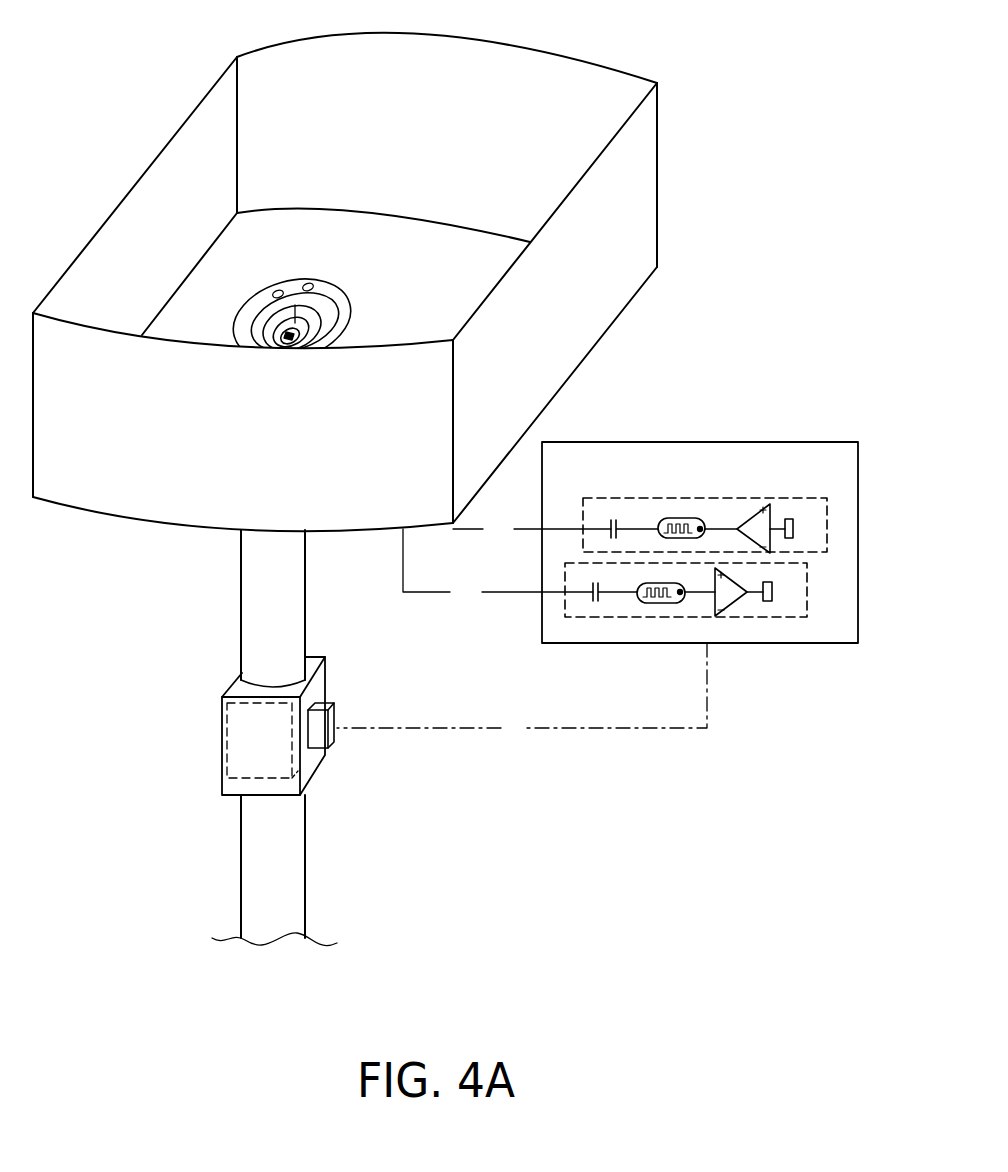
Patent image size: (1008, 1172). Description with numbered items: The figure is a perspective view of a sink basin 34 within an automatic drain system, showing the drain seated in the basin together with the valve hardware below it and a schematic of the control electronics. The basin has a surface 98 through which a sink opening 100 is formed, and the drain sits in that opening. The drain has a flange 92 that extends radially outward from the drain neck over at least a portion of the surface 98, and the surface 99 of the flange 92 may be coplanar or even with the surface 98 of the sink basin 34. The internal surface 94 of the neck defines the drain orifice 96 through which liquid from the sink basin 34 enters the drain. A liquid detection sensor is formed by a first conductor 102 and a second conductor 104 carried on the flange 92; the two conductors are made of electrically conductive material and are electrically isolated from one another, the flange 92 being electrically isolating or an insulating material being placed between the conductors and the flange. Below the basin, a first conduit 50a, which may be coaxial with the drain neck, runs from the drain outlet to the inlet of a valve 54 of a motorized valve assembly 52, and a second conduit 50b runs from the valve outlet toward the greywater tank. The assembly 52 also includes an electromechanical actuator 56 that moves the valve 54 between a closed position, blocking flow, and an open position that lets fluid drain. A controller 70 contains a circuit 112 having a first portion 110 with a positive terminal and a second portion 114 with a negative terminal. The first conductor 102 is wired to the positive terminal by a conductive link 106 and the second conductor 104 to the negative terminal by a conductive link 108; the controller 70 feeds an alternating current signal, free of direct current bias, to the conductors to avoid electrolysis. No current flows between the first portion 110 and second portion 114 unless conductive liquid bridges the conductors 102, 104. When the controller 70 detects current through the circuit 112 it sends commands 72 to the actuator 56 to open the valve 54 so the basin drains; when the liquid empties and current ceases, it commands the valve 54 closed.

The sink basin 34 is at (381, 267).
The surface of sink basin 98 is at (620, 273).
The sink opening 100 is at (327, 277).
The drain orifice 96 is at (262, 306).
The internal surface of neck 94 is at (257, 316).
The flange 92 is at (342, 324).
The surface of flange 99 is at (337, 298).
The first conductor 102 is at (276, 290).
The second conductor 104 is at (306, 283).
The first conduit 50a is at (268, 594).
The second conduit 50b is at (263, 855).
The motorized valve assembly 52 is at (236, 719).
The valve 54 is at (240, 733).
The electromechanical actuator 56 is at (333, 717).
The conductive link 106 is at (532, 528).
The conductive link 108 is at (498, 568).
The commands 72 is at (522, 693).
The circuit 112 is at (716, 548).
The controller 70 is at (743, 477).
The first portion of circuit 110 is at (690, 498).
The second portion of circuit 114 is at (783, 618).